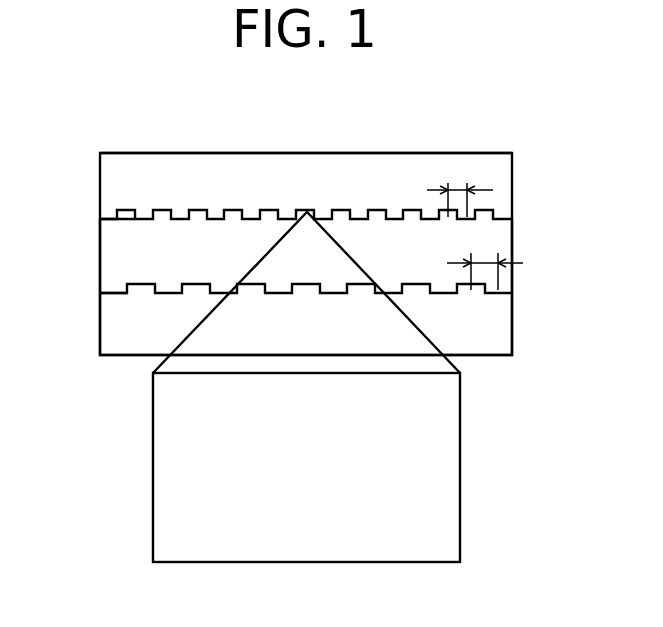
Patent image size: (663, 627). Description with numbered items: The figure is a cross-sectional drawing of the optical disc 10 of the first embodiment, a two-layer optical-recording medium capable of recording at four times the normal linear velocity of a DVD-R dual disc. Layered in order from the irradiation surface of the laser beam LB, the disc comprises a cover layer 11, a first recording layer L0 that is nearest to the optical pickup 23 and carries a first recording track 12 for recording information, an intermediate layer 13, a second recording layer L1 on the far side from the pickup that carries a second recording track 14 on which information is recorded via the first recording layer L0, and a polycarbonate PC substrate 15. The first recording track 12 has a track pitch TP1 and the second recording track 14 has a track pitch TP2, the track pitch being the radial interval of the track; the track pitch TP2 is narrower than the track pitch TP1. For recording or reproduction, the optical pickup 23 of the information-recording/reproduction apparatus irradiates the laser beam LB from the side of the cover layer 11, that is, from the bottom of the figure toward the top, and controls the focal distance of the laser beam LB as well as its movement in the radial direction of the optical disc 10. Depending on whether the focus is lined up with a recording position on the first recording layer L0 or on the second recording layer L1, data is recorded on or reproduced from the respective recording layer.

The optical disc 10 is at (305, 239).
The cover layer 11 is at (503, 324).
The first recording track 12 is at (168, 295).
The intermediate layer 13 is at (110, 250).
The second recording track 14 is at (234, 205).
The PC substrate 15 is at (168, 160).
The optical pickup 23 is at (460, 481).
The first recording layer L0 is at (102, 281).
The second recording layer L1 is at (104, 208).
The track pitch of the first recording track TP1 is at (458, 190).
The track pitch of the second recording track TP2 is at (483, 263).
The laser beam LB is at (427, 352).